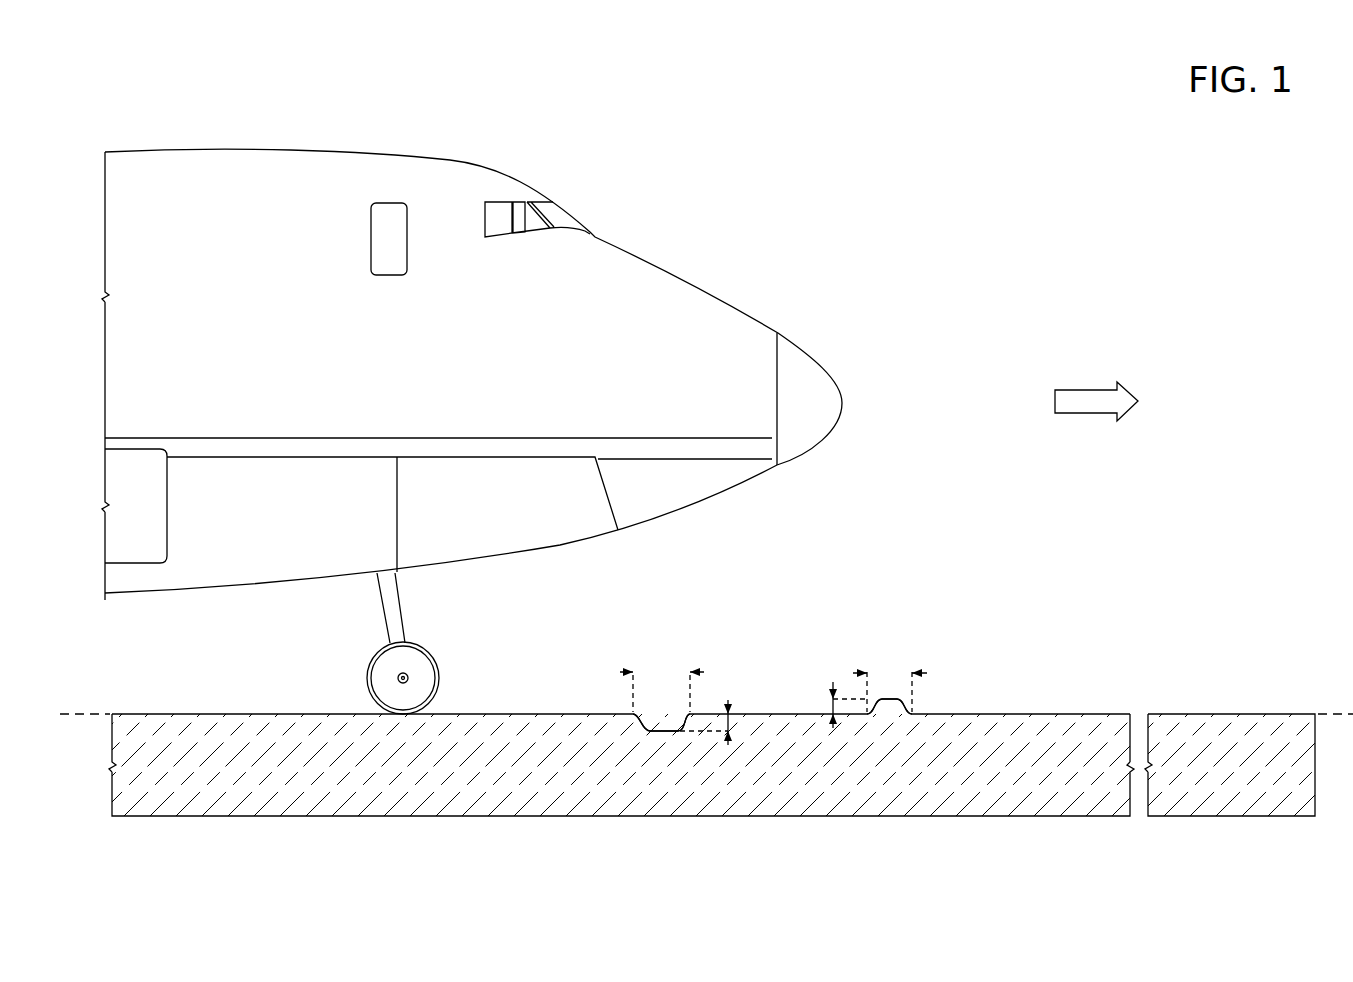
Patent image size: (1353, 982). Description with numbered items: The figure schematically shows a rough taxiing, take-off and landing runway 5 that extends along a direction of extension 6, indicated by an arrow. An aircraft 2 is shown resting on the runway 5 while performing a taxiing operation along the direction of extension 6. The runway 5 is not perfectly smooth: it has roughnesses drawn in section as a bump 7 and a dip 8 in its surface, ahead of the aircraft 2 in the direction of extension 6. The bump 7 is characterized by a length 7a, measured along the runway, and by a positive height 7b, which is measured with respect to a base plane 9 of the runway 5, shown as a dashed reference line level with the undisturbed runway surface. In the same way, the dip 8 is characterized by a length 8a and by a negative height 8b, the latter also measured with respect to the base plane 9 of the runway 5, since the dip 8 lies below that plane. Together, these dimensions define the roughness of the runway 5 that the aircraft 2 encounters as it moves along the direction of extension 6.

The aircraft 2 is at (707, 310).
The runway 5 is at (280, 715).
The direction of extension 6 is at (1087, 402).
The bump 7 is at (905, 690).
The length of the bump 7a is at (890, 682).
The positive height of the bump 7b is at (838, 705).
The dip 8 is at (633, 710).
The length of the dip 8a is at (662, 682).
The negative height of the dip 8b is at (715, 722).
The base plane 9 is at (67, 713).